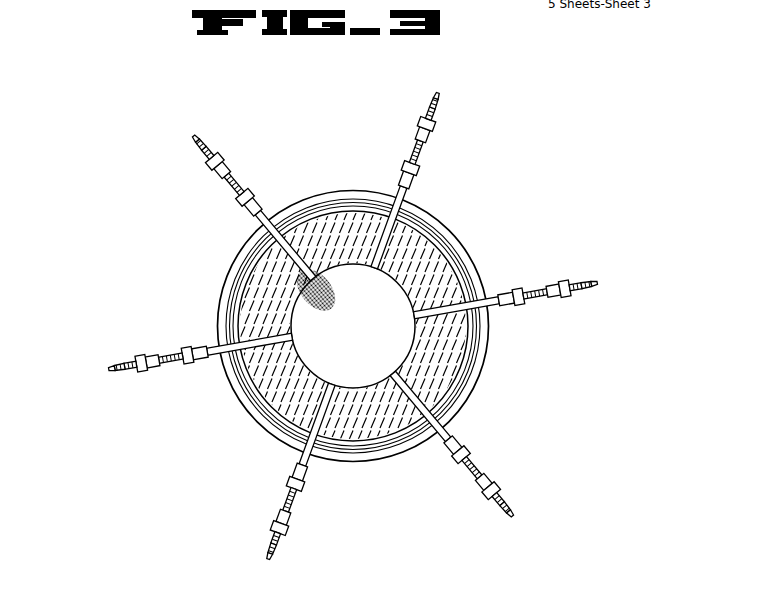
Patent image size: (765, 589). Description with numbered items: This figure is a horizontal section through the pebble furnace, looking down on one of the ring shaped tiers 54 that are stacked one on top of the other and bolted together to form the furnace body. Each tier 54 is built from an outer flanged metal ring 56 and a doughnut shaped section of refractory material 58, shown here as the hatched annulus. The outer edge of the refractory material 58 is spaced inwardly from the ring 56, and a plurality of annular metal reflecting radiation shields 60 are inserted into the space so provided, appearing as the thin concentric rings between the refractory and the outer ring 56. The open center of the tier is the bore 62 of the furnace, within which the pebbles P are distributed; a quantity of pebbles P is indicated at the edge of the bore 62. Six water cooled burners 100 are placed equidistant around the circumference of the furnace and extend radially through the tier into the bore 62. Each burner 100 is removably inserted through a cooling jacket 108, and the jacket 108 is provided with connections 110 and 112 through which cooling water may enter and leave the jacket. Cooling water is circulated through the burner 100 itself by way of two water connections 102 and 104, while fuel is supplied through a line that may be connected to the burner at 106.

The ring shaped tier 54 is at (258, 420).
The outer flanged metal ring 56 is at (477, 367).
The refractory material section 58 is at (453, 345).
The annular metal reflecting radiation shield 60 is at (245, 395).
The bore 62 is at (400, 290).
The pebbles P is at (327, 293).
The water cooled burner 100 is at (347, 323).
The water connection 102 is at (203, 148).
The water connection 104 is at (195, 134).
The fuel connection 106 is at (436, 94).
The cooling jacket 108 is at (417, 160).
The jacket water connection 110 is at (238, 184).
The jacket water connection 112 is at (228, 176).